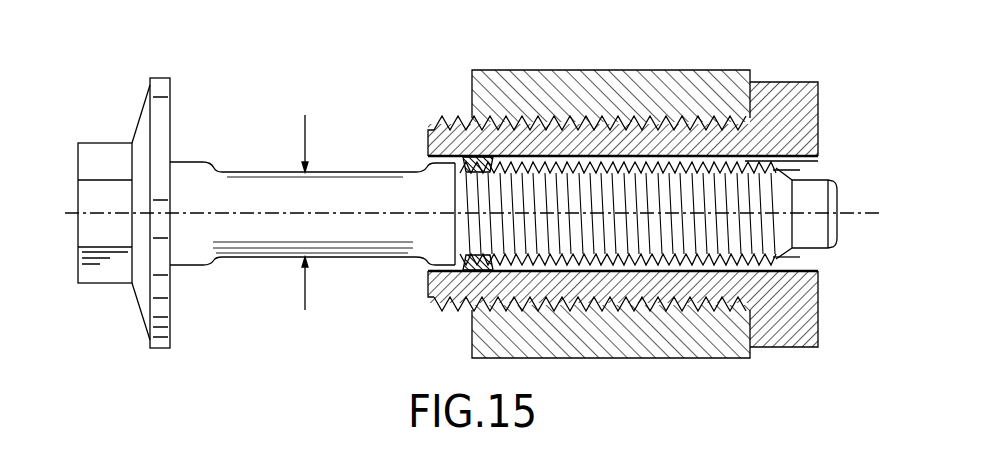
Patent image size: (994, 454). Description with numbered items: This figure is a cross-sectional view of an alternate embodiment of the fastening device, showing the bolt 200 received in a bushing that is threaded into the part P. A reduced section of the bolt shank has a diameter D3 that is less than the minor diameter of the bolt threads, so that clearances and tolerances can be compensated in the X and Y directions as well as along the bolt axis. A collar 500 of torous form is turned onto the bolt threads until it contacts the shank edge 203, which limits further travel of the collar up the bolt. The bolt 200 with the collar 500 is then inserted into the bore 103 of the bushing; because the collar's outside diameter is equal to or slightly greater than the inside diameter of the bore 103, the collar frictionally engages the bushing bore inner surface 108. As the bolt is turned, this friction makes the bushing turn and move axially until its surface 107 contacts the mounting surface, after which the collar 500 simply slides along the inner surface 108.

The bolt 200 is at (263, 253).
The shank edge 203 is at (432, 278).
The collar 500 is at (470, 122).
The bore 103 is at (800, 168).
The surface 107 is at (818, 108).
The bushing bore inner surface 108 is at (797, 263).
The part P is at (520, 70).
The diameter D3 is at (303, 199).